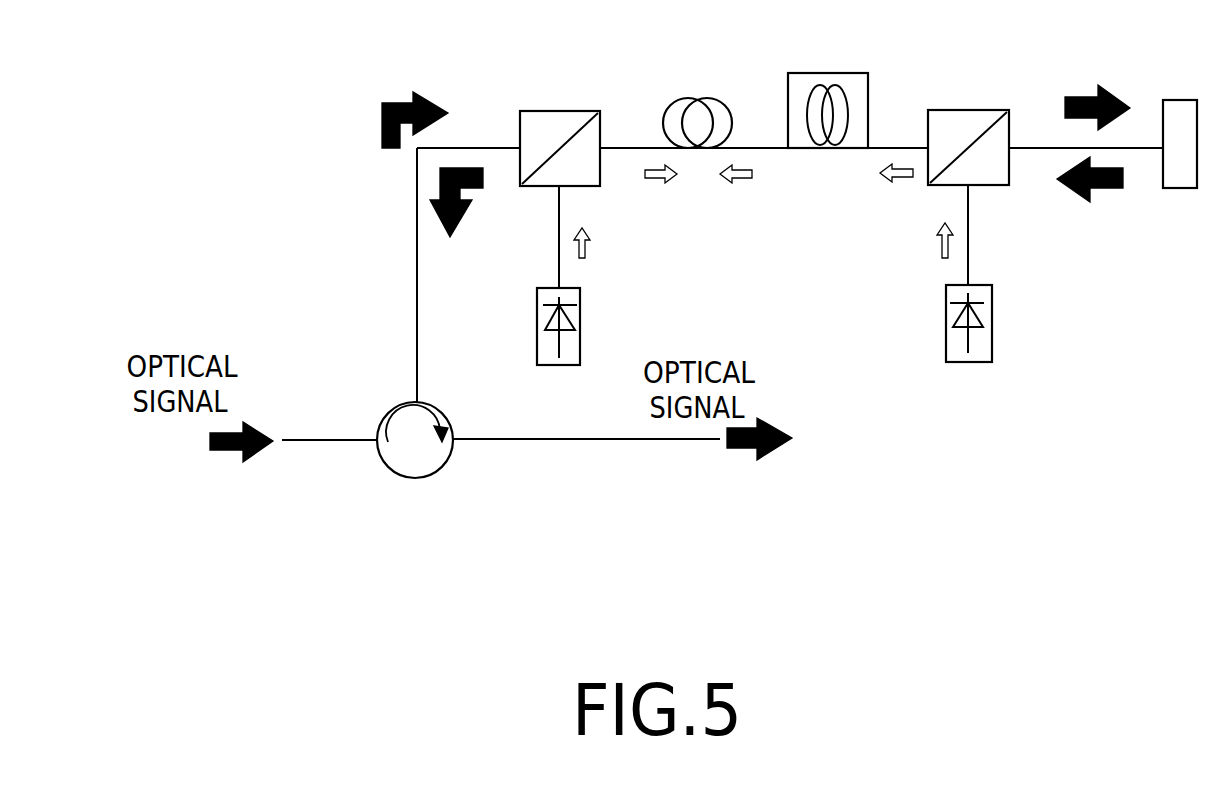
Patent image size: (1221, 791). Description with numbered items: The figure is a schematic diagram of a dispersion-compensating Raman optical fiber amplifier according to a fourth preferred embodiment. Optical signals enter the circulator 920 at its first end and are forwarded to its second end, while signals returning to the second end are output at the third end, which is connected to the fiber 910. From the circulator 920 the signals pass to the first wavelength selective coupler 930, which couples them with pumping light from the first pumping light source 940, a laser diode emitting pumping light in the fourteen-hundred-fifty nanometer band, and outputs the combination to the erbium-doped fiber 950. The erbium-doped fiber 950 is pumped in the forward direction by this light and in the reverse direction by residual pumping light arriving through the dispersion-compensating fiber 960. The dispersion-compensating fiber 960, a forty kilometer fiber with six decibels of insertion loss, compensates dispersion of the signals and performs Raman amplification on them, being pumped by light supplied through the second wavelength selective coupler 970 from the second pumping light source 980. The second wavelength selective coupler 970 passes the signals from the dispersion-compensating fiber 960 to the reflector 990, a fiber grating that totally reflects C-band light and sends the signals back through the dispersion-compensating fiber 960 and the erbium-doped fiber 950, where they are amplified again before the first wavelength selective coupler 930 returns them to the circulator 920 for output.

The fiber 910 is at (327, 439).
The circulator 920 is at (415, 478).
The first wavelength selective coupler 930 is at (560, 111).
The first pumping light source 940 is at (580, 327).
The erbium-doped fiber 950 is at (697, 99).
The dispersion-compensating fiber 960 is at (828, 73).
The second wavelength selective coupler 970 is at (968, 110).
The second pumping light source 980 is at (992, 323).
The reflector 990 is at (1182, 100).